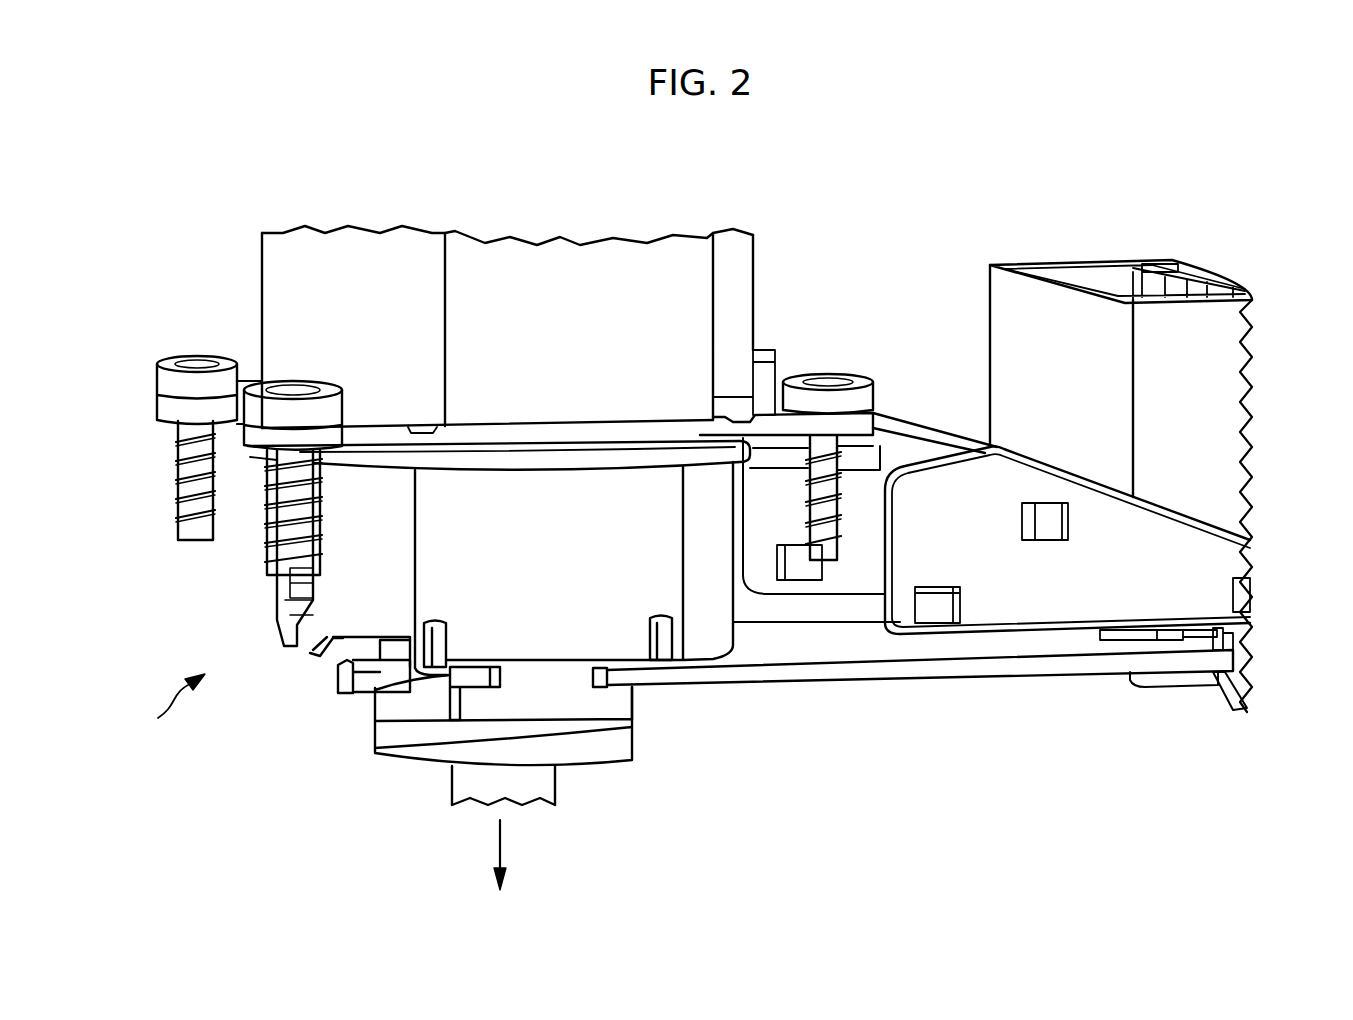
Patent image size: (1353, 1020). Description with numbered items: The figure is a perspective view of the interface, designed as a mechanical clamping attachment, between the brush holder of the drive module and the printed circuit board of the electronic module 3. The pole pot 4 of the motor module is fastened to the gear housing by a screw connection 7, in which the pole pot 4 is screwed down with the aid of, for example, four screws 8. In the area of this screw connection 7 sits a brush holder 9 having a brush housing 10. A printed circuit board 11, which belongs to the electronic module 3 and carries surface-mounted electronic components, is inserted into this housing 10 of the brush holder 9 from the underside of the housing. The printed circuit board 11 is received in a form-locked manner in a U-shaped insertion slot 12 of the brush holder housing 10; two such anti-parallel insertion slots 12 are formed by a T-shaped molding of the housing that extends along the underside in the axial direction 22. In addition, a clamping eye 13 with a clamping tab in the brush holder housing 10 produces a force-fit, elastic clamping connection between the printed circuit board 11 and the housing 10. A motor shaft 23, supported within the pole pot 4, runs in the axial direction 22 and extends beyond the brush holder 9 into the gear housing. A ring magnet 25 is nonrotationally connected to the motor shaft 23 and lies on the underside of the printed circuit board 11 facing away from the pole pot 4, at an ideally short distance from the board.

The electronic module 3 is at (1243, 568).
The pole pot 4 is at (578, 256).
The screw connection 7 is at (157, 400).
The screws 8 is at (822, 376).
The brush holder 9 is at (169, 704).
The brush housing 10 is at (340, 612).
The printed circuit board 11 is at (900, 682).
The U-shaped insertion slot 12 is at (593, 678).
The clamping eye 13 is at (655, 650).
The axial direction 22 is at (502, 840).
The motor shaft 23 is at (560, 780).
The ring magnet 25 is at (368, 738).